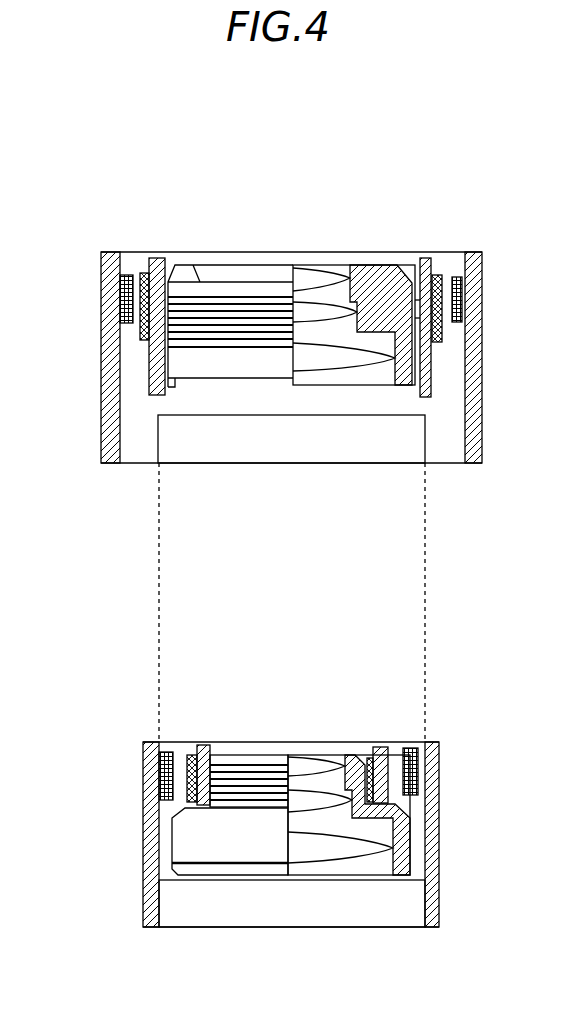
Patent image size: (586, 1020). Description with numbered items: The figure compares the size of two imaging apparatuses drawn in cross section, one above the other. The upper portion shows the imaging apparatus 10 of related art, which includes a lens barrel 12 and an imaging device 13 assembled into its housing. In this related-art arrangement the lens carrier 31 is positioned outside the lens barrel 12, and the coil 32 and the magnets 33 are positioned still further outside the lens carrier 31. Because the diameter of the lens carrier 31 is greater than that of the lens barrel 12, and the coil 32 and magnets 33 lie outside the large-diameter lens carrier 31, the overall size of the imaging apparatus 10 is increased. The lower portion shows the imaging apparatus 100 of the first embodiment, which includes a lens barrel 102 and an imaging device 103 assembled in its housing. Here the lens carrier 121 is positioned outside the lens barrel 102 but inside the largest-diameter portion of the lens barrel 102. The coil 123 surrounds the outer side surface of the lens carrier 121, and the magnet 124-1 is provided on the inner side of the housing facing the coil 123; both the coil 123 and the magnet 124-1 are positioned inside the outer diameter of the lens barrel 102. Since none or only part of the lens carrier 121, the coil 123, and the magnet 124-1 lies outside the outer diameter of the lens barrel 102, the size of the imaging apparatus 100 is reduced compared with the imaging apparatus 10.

The imaging apparatus 10 is at (357, 252).
The lens barrel 12 is at (188, 264).
The imaging device 13 is at (287, 465).
The lens carrier 31 is at (158, 257).
The coil 32 is at (143, 272).
The magnets 33 is at (125, 274).
The imaging apparatus 100 is at (255, 742).
The lens barrel 102 is at (318, 755).
The imaging device 103 is at (284, 928).
The lens carrier 121 is at (203, 744).
The coil 123 is at (189, 754).
The magnet 124-1 is at (163, 751).